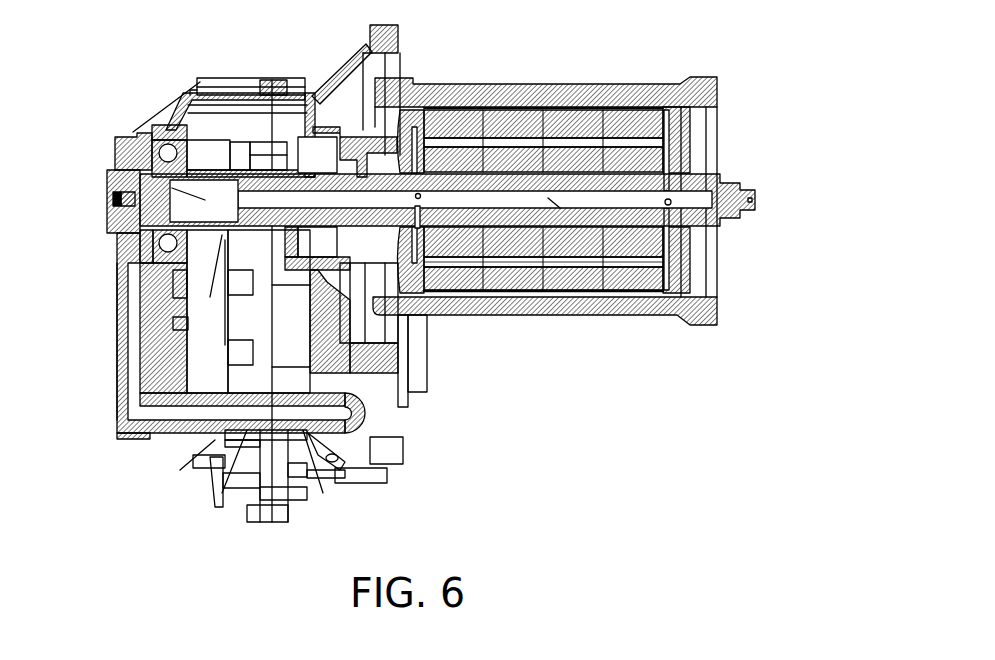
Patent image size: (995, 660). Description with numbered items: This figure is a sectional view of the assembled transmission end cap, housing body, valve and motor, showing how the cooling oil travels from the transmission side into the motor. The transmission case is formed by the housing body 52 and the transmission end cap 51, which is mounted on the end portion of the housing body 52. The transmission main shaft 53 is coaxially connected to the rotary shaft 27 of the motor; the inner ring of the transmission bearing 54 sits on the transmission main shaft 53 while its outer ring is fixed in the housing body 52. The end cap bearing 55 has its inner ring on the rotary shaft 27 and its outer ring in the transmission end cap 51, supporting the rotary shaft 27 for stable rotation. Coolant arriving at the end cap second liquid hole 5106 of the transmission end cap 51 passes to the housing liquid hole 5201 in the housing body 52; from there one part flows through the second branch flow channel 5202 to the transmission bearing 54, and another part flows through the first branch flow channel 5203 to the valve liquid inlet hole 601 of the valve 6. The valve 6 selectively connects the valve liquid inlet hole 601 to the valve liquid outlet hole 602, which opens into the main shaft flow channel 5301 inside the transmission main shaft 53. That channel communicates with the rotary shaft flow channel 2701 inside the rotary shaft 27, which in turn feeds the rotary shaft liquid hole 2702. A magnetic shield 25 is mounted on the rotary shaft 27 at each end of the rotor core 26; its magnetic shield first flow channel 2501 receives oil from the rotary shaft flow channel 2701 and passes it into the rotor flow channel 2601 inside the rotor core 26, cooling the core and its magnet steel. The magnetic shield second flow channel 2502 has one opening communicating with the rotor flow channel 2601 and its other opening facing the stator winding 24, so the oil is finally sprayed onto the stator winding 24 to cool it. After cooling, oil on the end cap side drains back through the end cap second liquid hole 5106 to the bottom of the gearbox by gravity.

The stator winding 24 is at (455, 92).
The magnetic shield 25 is at (667, 120).
The rotor core 26 is at (577, 117).
The rotary shaft 27 is at (720, 177).
The magnetic shield first flow channel 2501 is at (430, 297).
The magnetic shield second flow channel 2502 is at (378, 80).
The rotor flow channel 2601 is at (512, 262).
The rotary shaft flow channel 2701 is at (548, 198).
The rotary shaft liquid hole 2702 is at (670, 202).
The transmission end cap 51 is at (377, 388).
The end cap second liquid hole 5106 is at (323, 480).
The housing liquid hole 5201 is at (210, 457).
The second branch flow channel 5202 is at (138, 262).
The first branch flow channel 5203 is at (117, 257).
The main shaft flow channel 5301 is at (135, 134).
The housing body 52 is at (200, 110).
The transmission main shaft 53 is at (132, 128).
The transmission bearing 54 is at (133, 130).
The end cap bearing 55 is at (310, 152).
The valve 6 is at (107, 200).
The valve liquid inlet hole 601 is at (140, 225).
The valve liquid outlet hole 602 is at (107, 182).